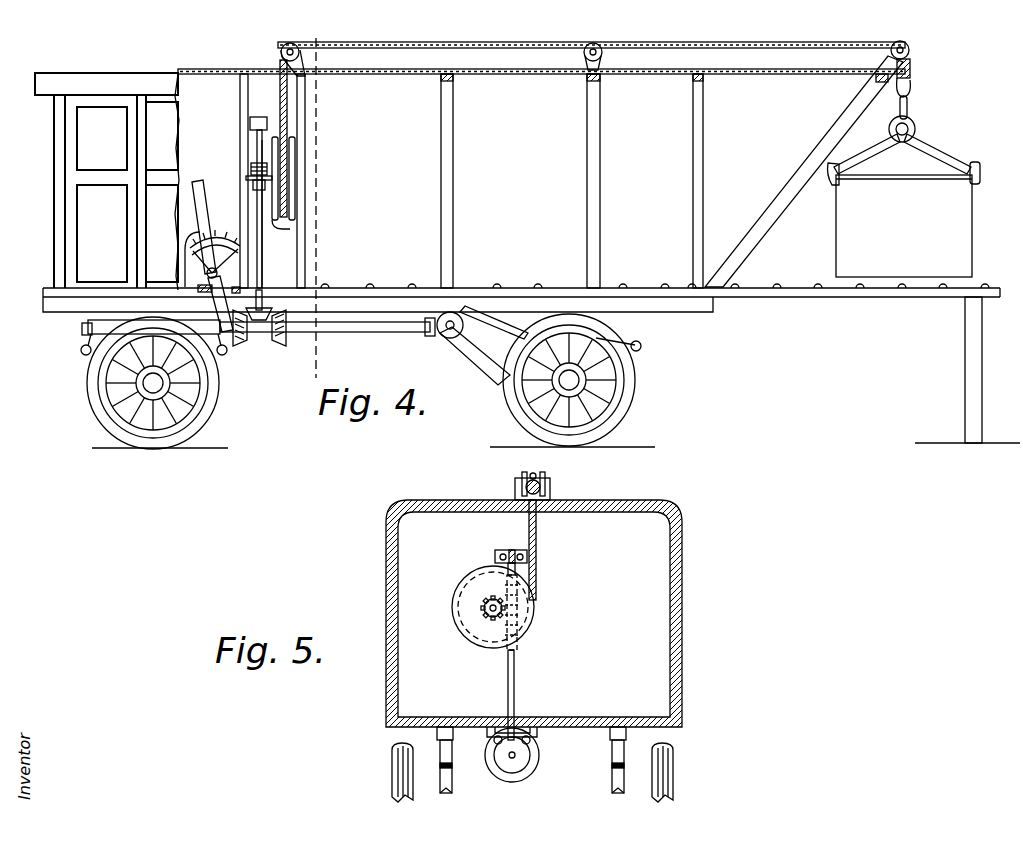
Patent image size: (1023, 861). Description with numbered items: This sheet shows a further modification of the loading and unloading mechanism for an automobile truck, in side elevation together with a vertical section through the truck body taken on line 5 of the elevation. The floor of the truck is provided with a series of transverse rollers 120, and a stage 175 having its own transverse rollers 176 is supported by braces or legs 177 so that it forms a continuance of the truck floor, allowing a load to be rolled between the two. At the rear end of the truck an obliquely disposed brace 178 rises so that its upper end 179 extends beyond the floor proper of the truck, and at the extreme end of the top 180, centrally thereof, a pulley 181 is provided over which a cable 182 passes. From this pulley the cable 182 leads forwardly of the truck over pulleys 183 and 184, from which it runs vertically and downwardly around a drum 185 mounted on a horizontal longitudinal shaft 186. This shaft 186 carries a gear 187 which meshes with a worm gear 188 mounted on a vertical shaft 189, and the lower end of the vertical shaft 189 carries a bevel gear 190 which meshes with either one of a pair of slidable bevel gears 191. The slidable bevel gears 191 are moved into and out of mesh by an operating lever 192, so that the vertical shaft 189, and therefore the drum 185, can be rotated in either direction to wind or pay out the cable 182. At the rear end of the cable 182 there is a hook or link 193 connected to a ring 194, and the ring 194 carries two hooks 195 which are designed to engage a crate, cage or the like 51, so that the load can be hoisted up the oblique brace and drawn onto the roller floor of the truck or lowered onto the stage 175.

In FIG. 4, the section line 5 is at (330, 42).
In FIG. 4, the crate, cage or the like 51 is at (904, 226).
In FIG. 4, the transverse rollers 120 is at (582, 284).
In FIG. 4, the stage 175 is at (879, 298).
In FIG. 4, the transverse rollers 176 is at (826, 286).
In FIG. 4, the braces or legs 177 is at (965, 383).
In FIG. 4, the obliquely disposed brace 178 is at (740, 230).
In FIG. 4, the upper end of brace 179 is at (913, 65).
In FIG. 4, the top 180 is at (541, 84).
In FIG. 4, the pulley 181 is at (900, 41).
In FIG. 4, the cable 182 is at (850, 45).
In FIG. 5, the cable 182 is at (538, 536).
In FIG. 4, the pulley 183 is at (594, 43).
In FIG. 4, the pulley 184 is at (301, 48).
In FIG. 5, the pulley 184 is at (541, 481).
In FIG. 4, the drum 185 is at (291, 156).
In FIG. 5, the drum 185 is at (537, 625).
In FIG. 4, the horizontal longitudinal shaft 186 is at (283, 223).
In FIG. 4, the gear 187 is at (256, 171).
In FIG. 5, the gear 187 is at (482, 612).
In FIG. 4, the worm gear 188 is at (258, 187).
In FIG. 5, the worm gear 188 is at (522, 612).
In FIG. 4, the vertical shaft 189 is at (266, 272).
In FIG. 5, the vertical shaft 189 is at (516, 673).
In FIG. 4, the bevel gear 190 is at (275, 338).
In FIG. 5, the bevel gear 190 is at (541, 749).
In FIG. 4, the slidable bevel gears 191 is at (236, 332).
In FIG. 5, the slidable bevel gears 191 is at (522, 760).
In FIG. 4, the operating lever 192 is at (195, 208).
In FIG. 4, the hook or link 193 is at (908, 109).
In FIG. 4, the ring 194 is at (917, 131).
In FIG. 4, the hooks 195 is at (926, 150).